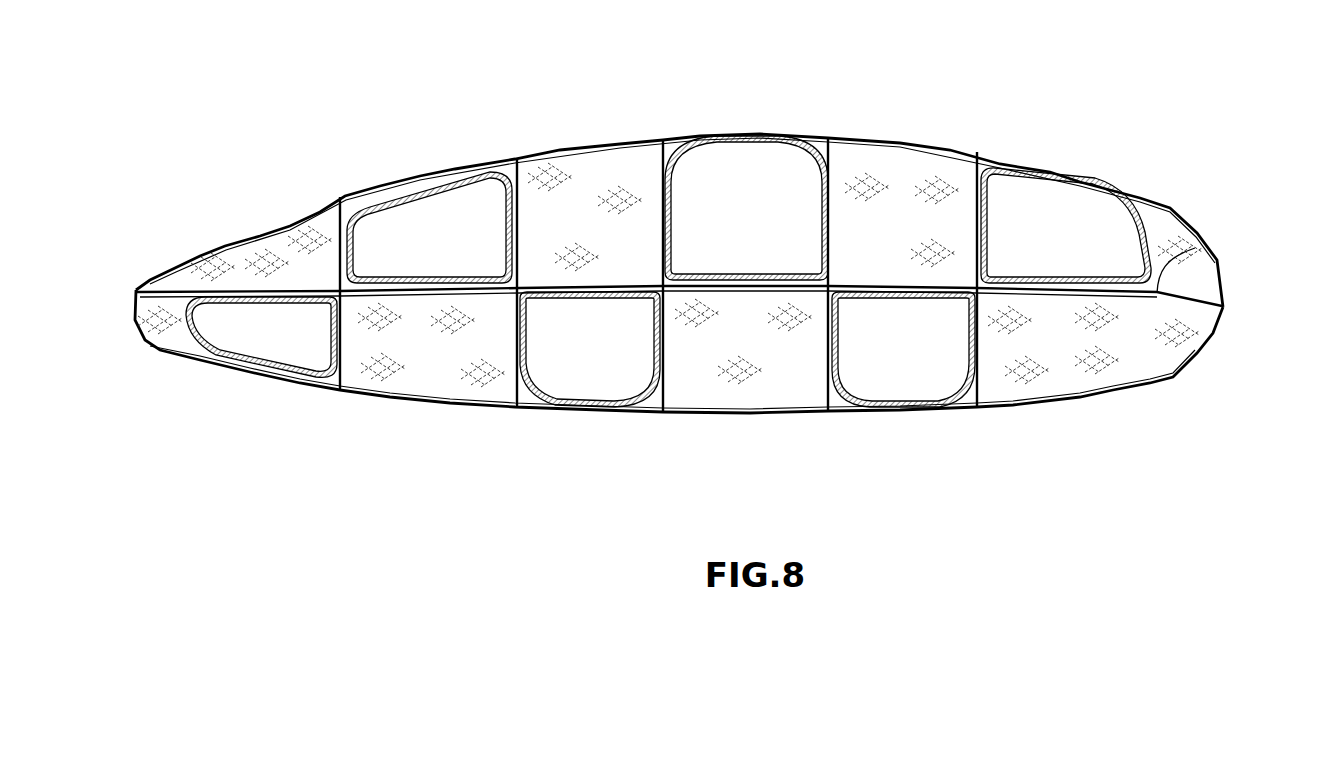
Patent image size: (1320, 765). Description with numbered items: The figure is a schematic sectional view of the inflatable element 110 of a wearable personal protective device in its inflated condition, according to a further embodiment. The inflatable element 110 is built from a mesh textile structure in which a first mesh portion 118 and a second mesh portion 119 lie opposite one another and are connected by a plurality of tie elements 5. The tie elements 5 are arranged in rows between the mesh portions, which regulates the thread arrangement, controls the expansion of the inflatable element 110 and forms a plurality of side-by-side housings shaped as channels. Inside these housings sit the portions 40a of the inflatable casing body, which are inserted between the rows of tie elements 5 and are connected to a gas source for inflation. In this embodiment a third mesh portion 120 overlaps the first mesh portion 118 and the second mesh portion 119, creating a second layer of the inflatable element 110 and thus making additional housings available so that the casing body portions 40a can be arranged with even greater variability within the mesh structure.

The inflatable element 110 is at (312, 124).
The portions of the inflatable casing body 40a is at (400, 175).
The tie elements 5 is at (517, 215).
The first mesh portion 118 is at (1013, 160).
The second mesh portion 119 is at (1030, 407).
The third mesh portion 120 is at (1178, 255).